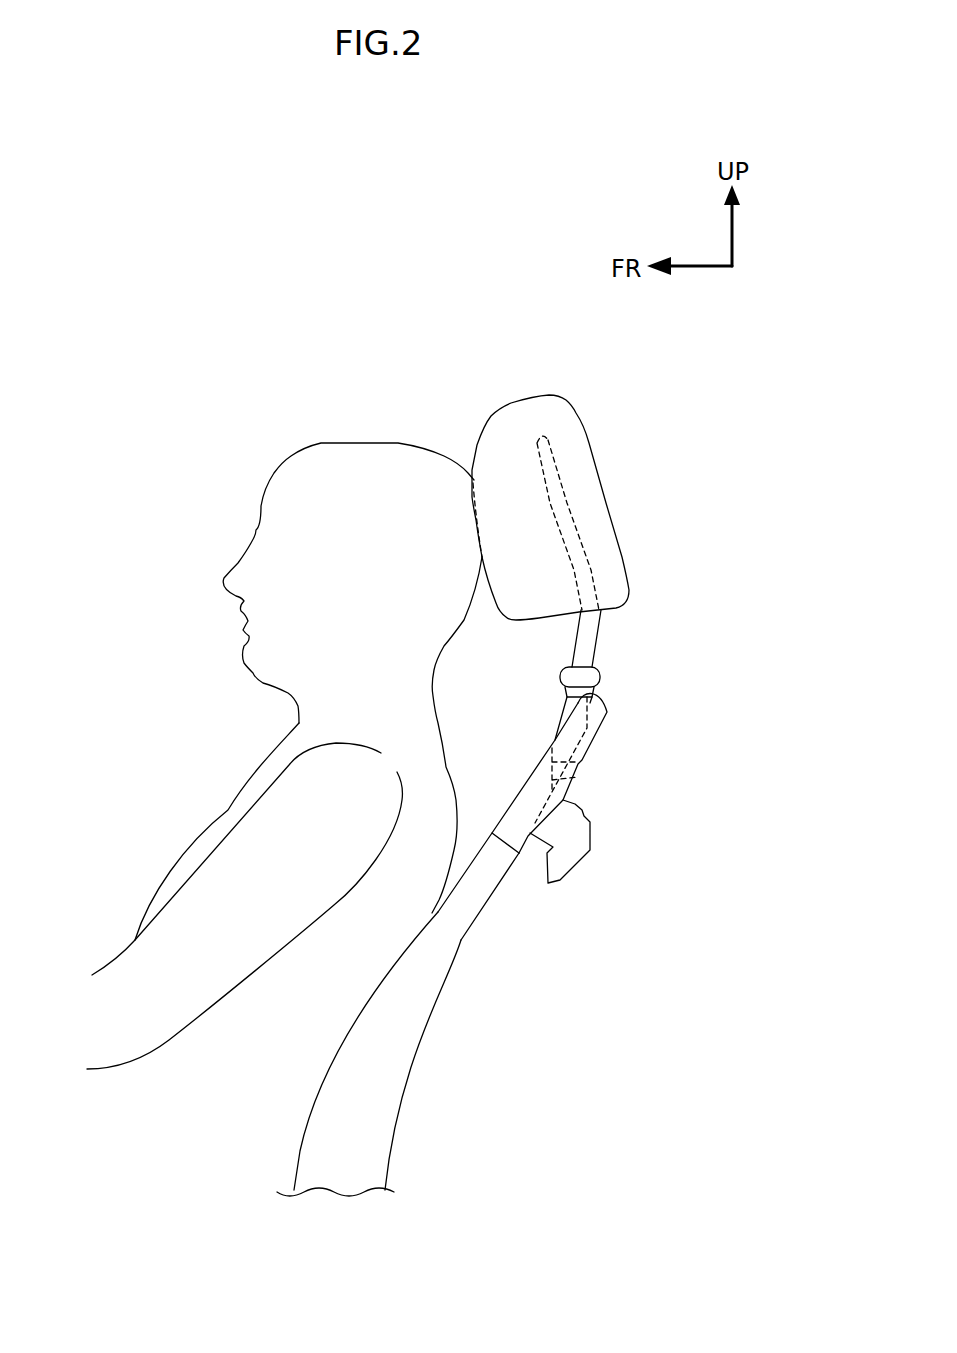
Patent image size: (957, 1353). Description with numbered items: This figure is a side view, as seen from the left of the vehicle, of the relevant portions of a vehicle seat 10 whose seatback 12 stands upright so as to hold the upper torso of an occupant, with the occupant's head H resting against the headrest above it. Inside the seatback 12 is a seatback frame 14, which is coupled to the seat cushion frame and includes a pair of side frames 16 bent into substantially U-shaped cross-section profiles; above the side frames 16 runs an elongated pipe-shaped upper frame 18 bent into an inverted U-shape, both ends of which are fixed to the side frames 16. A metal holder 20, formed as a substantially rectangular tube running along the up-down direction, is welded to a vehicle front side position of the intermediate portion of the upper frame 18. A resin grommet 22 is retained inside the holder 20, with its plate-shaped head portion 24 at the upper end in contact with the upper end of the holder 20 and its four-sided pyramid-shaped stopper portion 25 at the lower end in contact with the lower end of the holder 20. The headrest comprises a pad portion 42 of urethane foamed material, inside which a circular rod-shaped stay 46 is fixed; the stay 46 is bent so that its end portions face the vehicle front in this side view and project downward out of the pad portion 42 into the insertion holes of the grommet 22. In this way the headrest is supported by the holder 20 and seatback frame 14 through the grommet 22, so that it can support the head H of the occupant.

The vehicle seat 10 is at (445, 313).
The seatback 12 is at (435, 1014).
The seatback frame 14 is at (485, 910).
The side frame 16 is at (410, 1060).
The upper frame 18 is at (604, 707).
The holder 20 is at (553, 700).
The grommet 22 is at (586, 659).
The head portion 24 is at (601, 678).
The stopper portion 25 is at (579, 766).
The pad portion 42 is at (510, 433).
The stay 46 is at (603, 625).
The head H is at (393, 443).